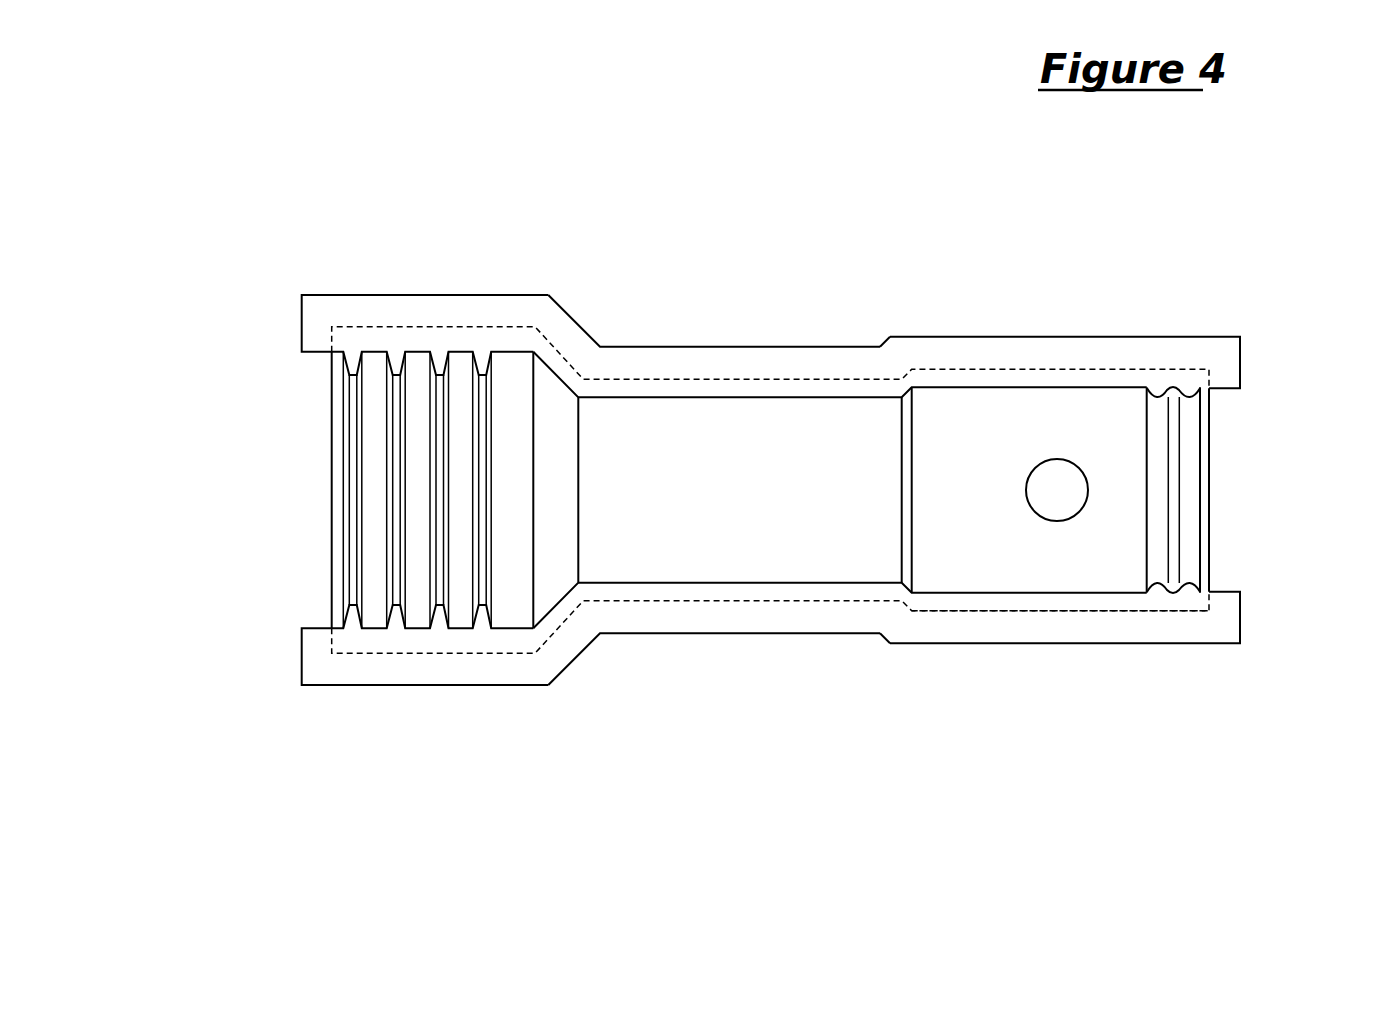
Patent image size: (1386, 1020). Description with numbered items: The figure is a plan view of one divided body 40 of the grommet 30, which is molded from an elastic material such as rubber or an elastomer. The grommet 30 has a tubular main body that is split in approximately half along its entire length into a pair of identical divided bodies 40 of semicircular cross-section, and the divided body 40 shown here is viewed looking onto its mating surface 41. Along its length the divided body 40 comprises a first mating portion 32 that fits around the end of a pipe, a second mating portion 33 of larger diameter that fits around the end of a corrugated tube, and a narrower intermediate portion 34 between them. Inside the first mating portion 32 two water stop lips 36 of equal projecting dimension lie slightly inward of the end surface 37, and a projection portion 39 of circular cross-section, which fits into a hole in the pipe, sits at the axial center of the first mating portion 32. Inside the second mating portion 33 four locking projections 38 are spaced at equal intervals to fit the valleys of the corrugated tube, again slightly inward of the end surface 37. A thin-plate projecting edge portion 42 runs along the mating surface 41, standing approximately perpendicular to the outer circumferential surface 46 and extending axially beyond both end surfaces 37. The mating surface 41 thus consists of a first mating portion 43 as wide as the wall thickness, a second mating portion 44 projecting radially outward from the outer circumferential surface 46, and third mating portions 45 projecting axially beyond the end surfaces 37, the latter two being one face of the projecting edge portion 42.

The grommet 30 is at (769, 421).
The divided body 40 is at (769, 421).
The first mating portion 32 is at (776, 486).
The second mating portion 33 is at (462, 365).
The intermediate portion 34 is at (642, 545).
The water stop lip 36 is at (1190, 552).
The end surface 37 is at (333, 482).
The locking projection 38 is at (397, 573).
The projection portion 39 is at (1057, 480).
The mating surface 41 is at (735, 362).
The projecting edge portion 42 is at (937, 355).
The first mating portion 43 is at (802, 388).
The second mating portion 44 is at (843, 362).
The third mating portion 45 is at (310, 337).
The outer circumferential surface 46 is at (1017, 610).